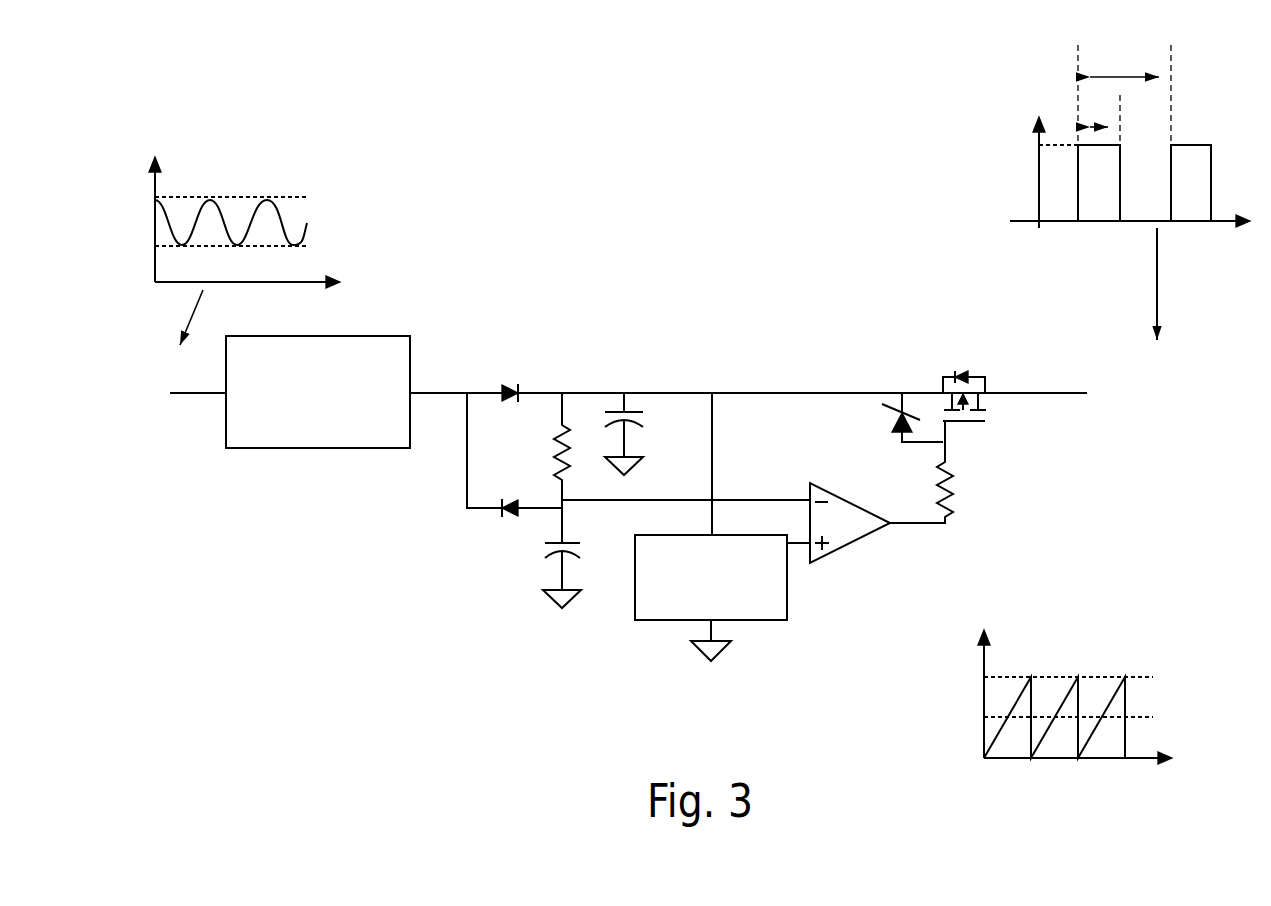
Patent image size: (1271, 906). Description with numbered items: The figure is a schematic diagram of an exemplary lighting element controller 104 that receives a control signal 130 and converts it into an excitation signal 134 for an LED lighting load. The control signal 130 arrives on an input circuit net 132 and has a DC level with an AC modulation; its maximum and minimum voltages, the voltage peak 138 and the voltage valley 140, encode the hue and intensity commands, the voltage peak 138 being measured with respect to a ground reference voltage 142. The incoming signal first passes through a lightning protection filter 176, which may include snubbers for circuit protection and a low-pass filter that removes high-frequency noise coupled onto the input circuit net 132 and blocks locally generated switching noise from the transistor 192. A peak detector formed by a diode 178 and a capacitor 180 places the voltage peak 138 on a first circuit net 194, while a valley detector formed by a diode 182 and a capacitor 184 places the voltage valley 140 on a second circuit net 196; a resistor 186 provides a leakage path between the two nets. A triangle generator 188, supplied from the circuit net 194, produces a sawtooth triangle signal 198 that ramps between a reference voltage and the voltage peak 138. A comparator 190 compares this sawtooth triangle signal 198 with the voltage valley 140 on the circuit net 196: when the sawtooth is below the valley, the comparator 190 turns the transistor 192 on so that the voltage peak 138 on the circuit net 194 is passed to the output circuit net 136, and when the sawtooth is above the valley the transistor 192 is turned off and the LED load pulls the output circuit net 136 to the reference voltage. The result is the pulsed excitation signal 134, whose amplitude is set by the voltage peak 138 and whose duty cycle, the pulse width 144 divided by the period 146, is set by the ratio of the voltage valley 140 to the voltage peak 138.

The lighting element controller 104 is at (665, 207).
The control signal 130 is at (265, 177).
The input circuit net 132 is at (202, 395).
The excitation signal 134 is at (1198, 120).
The output circuit net 136 is at (1052, 393).
The voltage peak 138 is at (297, 195).
The voltage valley 140 is at (235, 248).
The ground reference voltage 142 is at (1025, 218).
The pulse width 144 is at (1100, 128).
The period 146 is at (1138, 80).
The lightning protection filter 176 is at (380, 336).
The diode 178 is at (508, 384).
The capacitor 180 is at (637, 400).
The diode 182 is at (512, 516).
The capacitor 184 is at (548, 557).
The resistor 186 is at (566, 426).
The triangle generator 188 is at (760, 620).
The comparator 190 is at (835, 552).
The transistor 192 is at (963, 370).
The circuit net 194 is at (775, 393).
The circuit net 196 is at (740, 498).
The sawtooth triangle signal 198 is at (1095, 655).